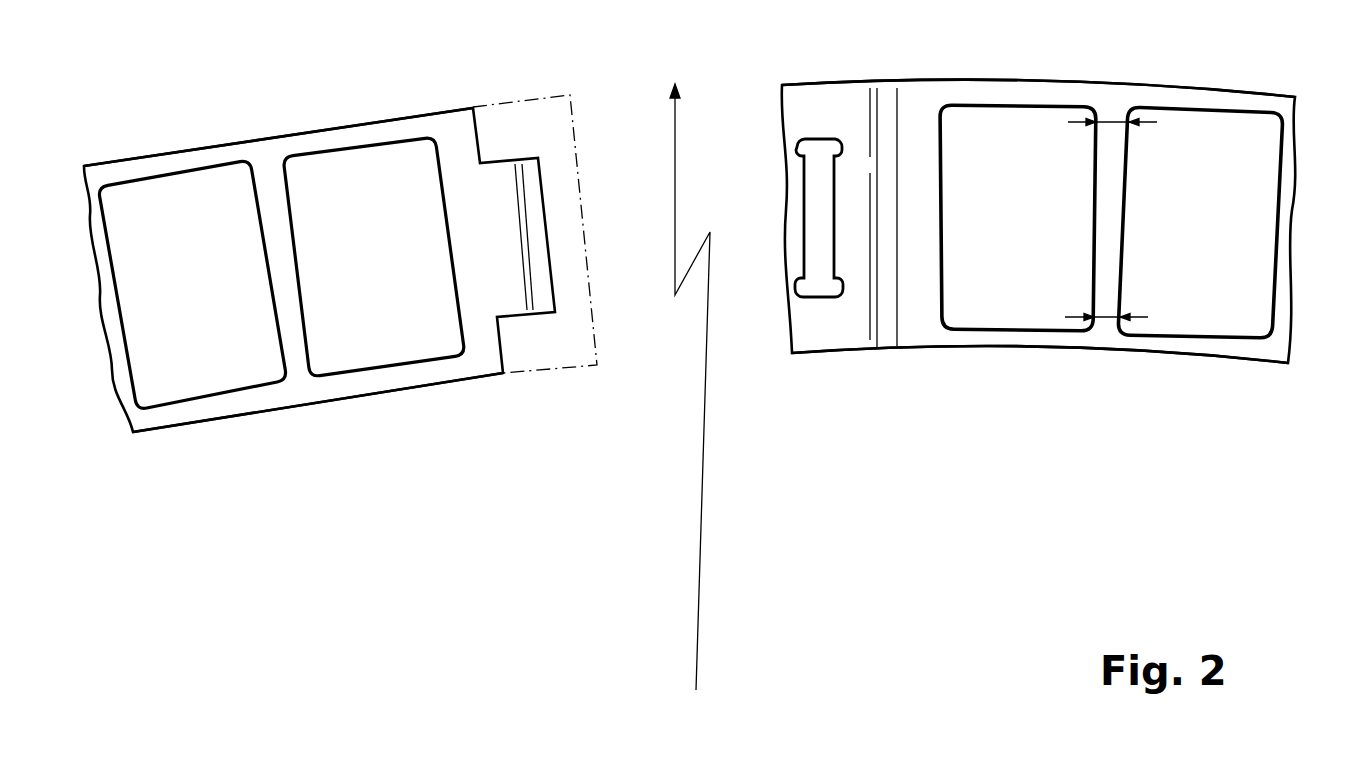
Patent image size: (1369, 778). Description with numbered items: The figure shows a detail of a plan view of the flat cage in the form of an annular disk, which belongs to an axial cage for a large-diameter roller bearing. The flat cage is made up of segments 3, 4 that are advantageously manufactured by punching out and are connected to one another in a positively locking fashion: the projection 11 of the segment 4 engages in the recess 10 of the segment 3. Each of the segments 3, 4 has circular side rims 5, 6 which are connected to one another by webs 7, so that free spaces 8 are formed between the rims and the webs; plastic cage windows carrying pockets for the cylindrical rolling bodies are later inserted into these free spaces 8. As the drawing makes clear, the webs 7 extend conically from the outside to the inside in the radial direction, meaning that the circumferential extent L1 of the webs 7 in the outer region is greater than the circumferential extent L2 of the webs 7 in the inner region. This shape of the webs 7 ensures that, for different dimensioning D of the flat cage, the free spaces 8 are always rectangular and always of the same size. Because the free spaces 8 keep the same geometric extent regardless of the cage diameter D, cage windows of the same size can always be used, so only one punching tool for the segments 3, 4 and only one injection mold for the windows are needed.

The segment 3 is at (820, 97).
The segment 4 is at (453, 123).
The circular side rim 5 is at (165, 163).
The circular side rim 6 is at (223, 405).
The web 7 is at (296, 328).
The free space 8 is at (198, 237).
The recess 10 is at (825, 288).
The projection 11 is at (530, 168).
The circumferential extent of the webs in the outer region L1 is at (1112, 118).
The circumferential extent of the webs in the inner region L2 is at (1105, 315).
The dimensioning of the flat cage D is at (700, 600).